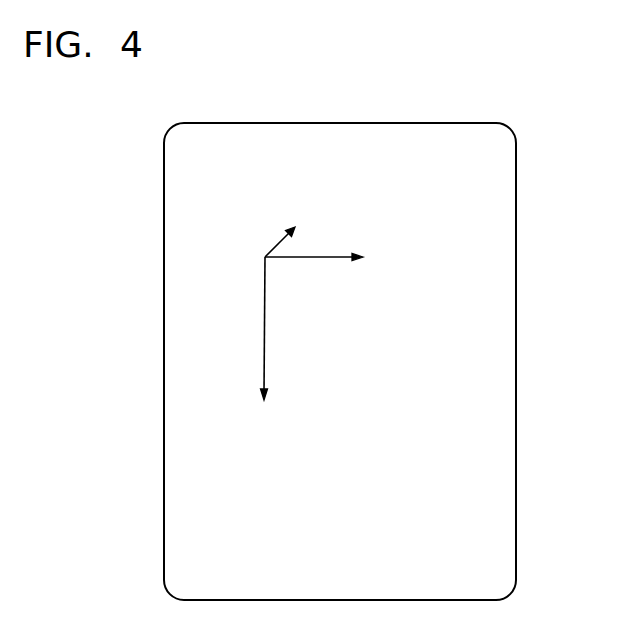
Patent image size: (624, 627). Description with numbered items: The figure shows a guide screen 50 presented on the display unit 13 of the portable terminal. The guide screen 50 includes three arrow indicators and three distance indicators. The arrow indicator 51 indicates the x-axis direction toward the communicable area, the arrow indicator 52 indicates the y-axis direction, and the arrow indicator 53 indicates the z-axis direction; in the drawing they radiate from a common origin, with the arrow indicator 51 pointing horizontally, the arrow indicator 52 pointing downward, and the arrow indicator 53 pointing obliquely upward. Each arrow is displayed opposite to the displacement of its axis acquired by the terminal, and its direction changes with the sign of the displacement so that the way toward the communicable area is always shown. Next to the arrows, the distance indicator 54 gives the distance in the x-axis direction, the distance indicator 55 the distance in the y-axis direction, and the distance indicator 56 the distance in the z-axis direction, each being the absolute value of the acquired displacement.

The display unit 13 is at (516, 243).
The guide screen 50 is at (369, 192).
The arrow indicator 51 is at (304, 259).
The arrow indicator 52 is at (263, 319).
The arrow indicator 53 is at (280, 243).
The distance indicator 54 is at (400, 246).
The distance indicator 55 is at (265, 447).
The distance indicator 56 is at (301, 197).